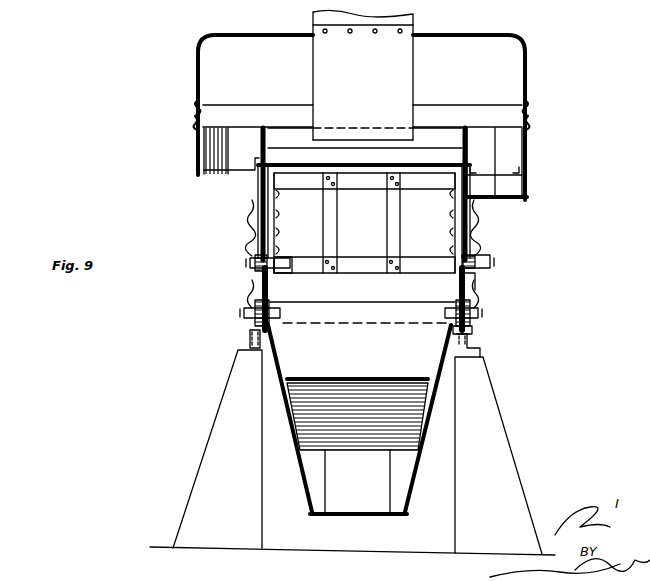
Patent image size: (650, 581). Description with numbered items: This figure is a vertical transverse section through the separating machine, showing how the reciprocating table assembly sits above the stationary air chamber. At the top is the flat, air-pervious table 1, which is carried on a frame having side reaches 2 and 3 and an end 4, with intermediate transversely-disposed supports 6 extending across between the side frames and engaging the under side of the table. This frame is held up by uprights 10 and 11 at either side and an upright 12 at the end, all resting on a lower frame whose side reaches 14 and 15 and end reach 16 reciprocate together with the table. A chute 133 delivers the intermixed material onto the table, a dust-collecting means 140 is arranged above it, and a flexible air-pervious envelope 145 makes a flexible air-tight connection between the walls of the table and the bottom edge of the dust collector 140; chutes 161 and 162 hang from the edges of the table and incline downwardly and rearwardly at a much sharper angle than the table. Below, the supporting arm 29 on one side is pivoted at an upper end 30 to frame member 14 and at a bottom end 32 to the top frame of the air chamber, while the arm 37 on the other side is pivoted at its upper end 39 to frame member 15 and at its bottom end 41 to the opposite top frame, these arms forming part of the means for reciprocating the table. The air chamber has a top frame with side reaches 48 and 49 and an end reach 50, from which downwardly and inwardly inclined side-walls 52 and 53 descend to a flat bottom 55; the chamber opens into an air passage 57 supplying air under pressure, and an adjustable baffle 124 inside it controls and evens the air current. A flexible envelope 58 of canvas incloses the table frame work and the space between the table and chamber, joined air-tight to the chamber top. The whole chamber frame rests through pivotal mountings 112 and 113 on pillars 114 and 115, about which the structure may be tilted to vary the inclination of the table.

The table 1 is at (372, 165).
The side reach 2 is at (272, 188).
The side reach 3 is at (462, 197).
The end 4 is at (353, 172).
The intermediate transversely-disposed support 6 is at (355, 205).
The upright 10 is at (262, 218).
The upright 11 is at (467, 223).
The upright 12 is at (387, 230).
The side reach 14 is at (260, 258).
The side reach 15 is at (468, 248).
The end reach 16 is at (360, 268).
The supporting arm 29 is at (276, 293).
The upper end 30 is at (286, 262).
The bottom end 32 is at (283, 311).
The arm 37 is at (470, 290).
The upper end 39 is at (474, 268).
The bottom end 41 is at (480, 313).
The side reach 48 is at (250, 317).
The side reach 49 is at (470, 330).
The end reach 50 is at (347, 303).
The side-wall 52 is at (284, 420).
The side-wall 53 is at (424, 439).
The flat bottom 55 is at (351, 516).
The air passage 57 is at (370, 487).
The flexible envelope 58 is at (253, 202).
The pivotal mounting 112 is at (250, 338).
The pivotal mounting 113 is at (478, 341).
The pillar 114 is at (225, 404).
The pillar 115 is at (484, 399).
The baffle 124 is at (322, 460).
The chute 133 is at (405, 65).
The dust-collecting means 140 is at (528, 70).
The flexible air-pervious envelope 145 is at (196, 107).
The chute 161 is at (205, 158).
The chute 162 is at (508, 187).